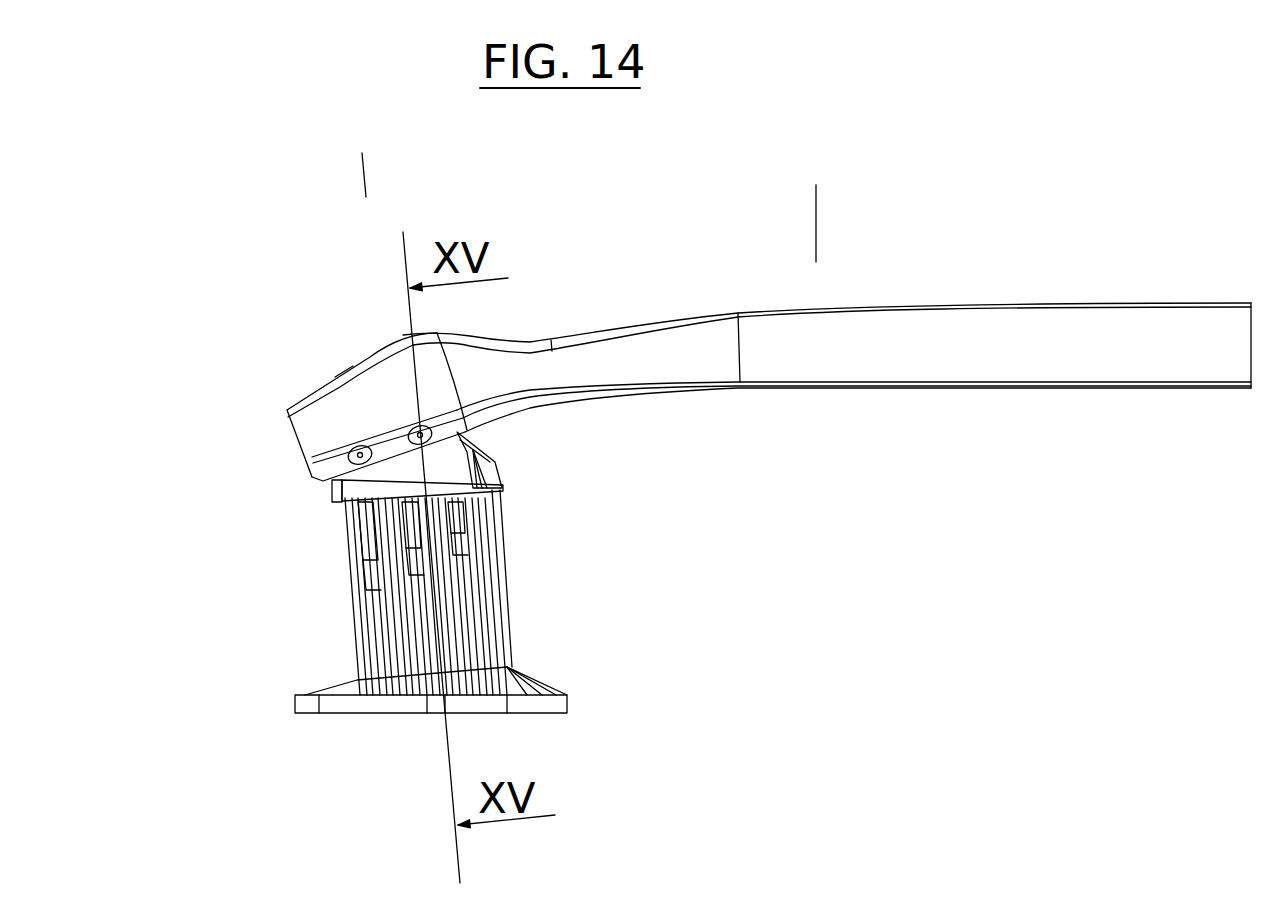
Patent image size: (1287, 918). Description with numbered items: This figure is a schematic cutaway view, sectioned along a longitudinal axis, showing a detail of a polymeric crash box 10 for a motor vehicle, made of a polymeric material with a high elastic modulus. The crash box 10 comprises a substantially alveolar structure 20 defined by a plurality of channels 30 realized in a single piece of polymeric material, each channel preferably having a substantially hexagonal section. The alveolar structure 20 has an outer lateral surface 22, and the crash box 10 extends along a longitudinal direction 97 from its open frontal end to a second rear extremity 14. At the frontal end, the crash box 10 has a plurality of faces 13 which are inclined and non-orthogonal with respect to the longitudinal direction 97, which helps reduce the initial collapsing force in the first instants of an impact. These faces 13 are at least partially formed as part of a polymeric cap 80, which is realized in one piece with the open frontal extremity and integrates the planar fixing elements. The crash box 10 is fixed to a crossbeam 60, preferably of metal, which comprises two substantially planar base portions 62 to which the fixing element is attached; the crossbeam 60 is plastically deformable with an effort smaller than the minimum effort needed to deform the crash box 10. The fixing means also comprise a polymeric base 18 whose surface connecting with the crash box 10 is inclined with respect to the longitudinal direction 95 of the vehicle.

The crash box 10 is at (180, 455).
The faces 13 is at (343, 523).
The second rear extremity 14 is at (358, 655).
The polymeric base 18 is at (560, 700).
The alveolar structure 20 is at (328, 537).
The outer lateral surface 22 is at (495, 497).
The channels 30 is at (353, 561).
The crossbeam 60 is at (657, 302).
The base portions 62 is at (330, 467).
The polymeric cap 80 is at (455, 457).
The longitudinal direction of the vehicle 95 is at (817, 229).
The longitudinal direction 97 is at (360, 172).